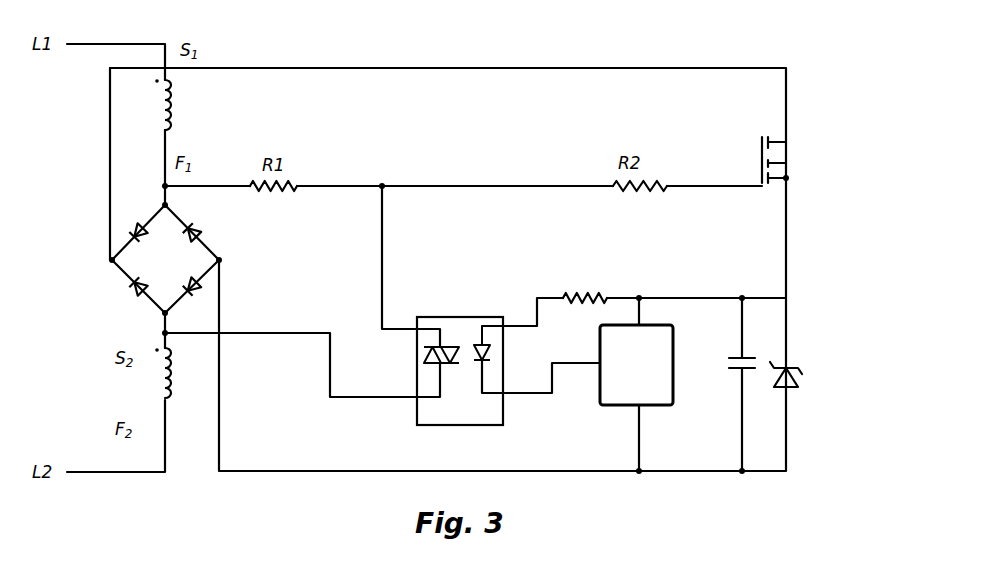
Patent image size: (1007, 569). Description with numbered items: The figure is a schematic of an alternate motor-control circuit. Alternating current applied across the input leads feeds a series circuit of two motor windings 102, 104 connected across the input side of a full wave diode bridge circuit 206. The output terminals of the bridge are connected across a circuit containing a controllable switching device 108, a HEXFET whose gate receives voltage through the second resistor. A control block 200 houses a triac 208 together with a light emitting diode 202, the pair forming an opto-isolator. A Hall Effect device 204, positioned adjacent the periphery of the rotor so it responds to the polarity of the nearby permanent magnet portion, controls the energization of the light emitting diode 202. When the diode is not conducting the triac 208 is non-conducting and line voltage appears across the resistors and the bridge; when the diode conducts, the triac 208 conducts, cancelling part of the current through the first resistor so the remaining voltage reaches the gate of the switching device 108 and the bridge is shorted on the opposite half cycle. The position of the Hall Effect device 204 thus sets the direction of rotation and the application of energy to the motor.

The winding 102 is at (180, 110).
The winding 104 is at (180, 389).
The controllable switching device (HEXFET) 108 is at (757, 147).
The control block 200 is at (453, 315).
The light emitting diode 202 is at (490, 355).
The Hall Effect device 204 is at (650, 322).
The diode bridge circuit 206 is at (212, 243).
The triac 208 is at (433, 338).